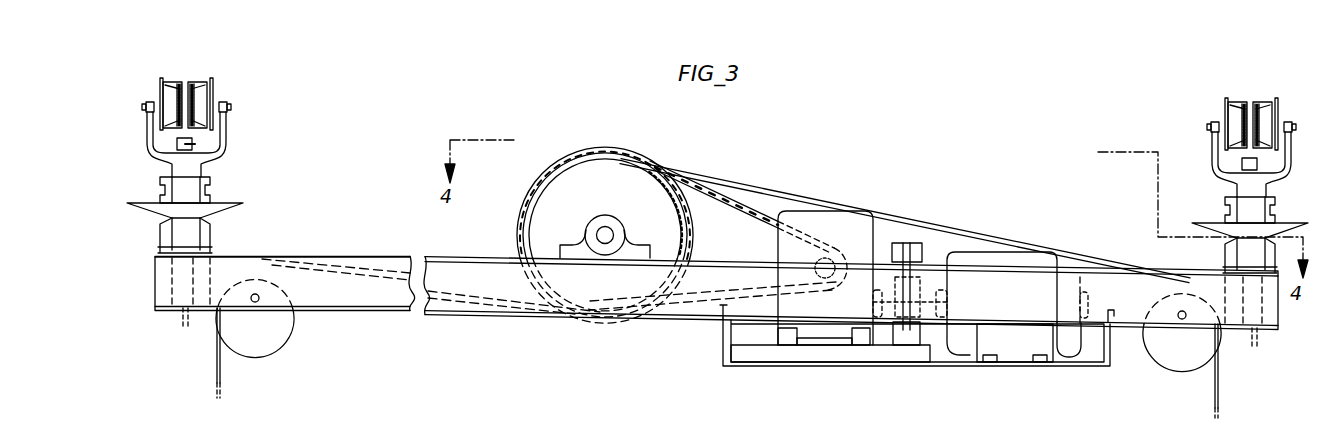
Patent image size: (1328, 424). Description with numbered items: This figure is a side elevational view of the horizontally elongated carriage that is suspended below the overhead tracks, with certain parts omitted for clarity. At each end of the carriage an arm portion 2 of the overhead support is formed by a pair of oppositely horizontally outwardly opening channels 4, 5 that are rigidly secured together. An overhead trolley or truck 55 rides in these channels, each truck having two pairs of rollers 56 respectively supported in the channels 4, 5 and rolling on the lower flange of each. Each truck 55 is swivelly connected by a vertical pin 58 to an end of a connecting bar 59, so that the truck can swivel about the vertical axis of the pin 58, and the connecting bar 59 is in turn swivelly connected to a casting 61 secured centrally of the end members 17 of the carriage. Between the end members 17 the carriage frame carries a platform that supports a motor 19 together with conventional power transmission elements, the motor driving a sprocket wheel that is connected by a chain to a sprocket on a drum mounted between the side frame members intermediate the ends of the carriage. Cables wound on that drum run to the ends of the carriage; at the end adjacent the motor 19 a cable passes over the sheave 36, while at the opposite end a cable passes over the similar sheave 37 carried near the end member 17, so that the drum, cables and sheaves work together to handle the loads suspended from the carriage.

The arm portion 2 is at (1258, 76).
The channel 4 is at (176, 82).
The channel 5 is at (195, 88).
The end member 17 is at (720, 312).
The motor 19 is at (1028, 258).
The sheave 36 is at (1164, 338).
The sheave 37 is at (272, 322).
The overhead trolley 55 is at (209, 155).
The roller 56 is at (172, 98).
The vertical pin 58 is at (222, 146).
The connecting bar 59 is at (208, 192).
The casting 61 is at (210, 240).